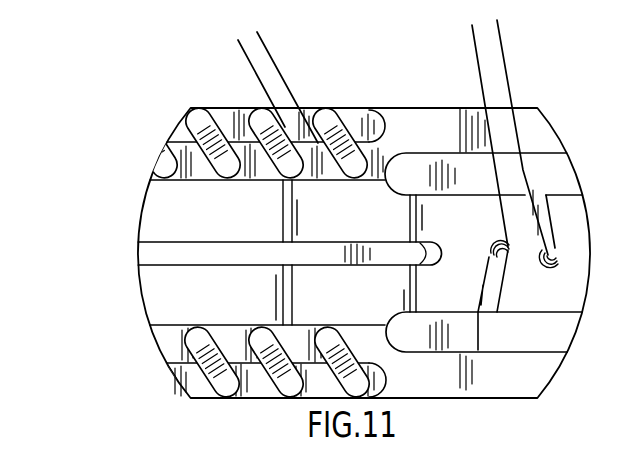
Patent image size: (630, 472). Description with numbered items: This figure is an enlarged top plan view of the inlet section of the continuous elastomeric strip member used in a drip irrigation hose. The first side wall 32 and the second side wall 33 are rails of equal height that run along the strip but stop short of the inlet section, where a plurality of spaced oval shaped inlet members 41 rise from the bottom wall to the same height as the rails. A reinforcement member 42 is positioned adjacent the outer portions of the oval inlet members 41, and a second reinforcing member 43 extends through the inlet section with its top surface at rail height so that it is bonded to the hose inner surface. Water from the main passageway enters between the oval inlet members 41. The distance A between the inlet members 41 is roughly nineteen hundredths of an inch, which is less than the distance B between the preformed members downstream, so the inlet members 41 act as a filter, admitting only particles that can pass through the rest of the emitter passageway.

The distance between inlet members A is at (305, 17).
The distance between preformed members B is at (422, 48).
The first side wall 32 is at (570, 327).
The second side wall 33 is at (543, 162).
The oval shaped inlet members 41 is at (332, 125).
The reinforcement member 42 is at (178, 133).
The second reinforcing member 43 is at (216, 257).